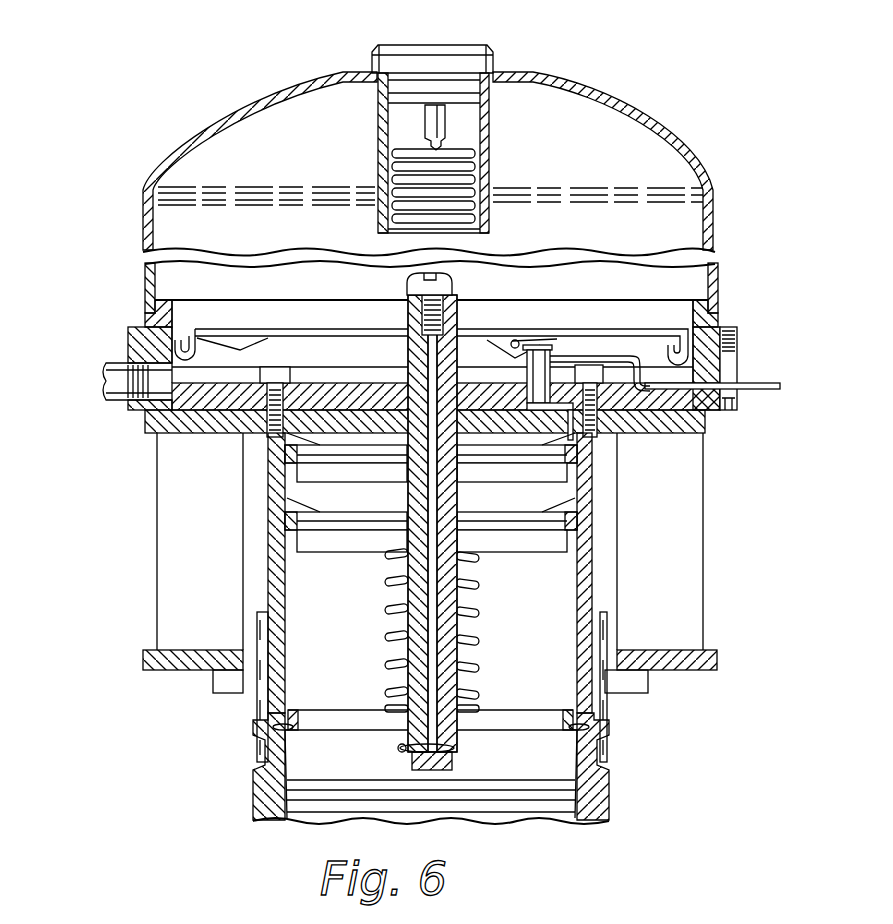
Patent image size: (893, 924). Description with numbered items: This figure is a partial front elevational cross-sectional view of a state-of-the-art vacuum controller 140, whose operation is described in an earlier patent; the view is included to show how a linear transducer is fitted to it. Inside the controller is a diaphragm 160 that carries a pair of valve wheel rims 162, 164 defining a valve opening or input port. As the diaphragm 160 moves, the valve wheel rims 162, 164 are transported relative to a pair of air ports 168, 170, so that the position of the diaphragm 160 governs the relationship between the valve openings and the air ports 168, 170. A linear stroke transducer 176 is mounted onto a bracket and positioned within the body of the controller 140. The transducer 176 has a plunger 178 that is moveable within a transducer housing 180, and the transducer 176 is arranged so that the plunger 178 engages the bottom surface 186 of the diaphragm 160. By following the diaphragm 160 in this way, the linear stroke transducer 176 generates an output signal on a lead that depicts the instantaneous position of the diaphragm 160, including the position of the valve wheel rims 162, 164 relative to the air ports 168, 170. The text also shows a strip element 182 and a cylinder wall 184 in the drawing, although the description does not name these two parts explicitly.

The vacuum controller 140 is at (563, 112).
The diaphragm 160 is at (618, 325).
The valve wheel rim 162 is at (298, 440).
The valve wheel rim 164 is at (297, 500).
The air port 168 is at (287, 470).
The air port 170 is at (287, 530).
The linear stroke transducer 176 is at (715, 327).
The plunger 178 is at (545, 335).
The transducer housing 180 is at (484, 350).
The mounting strip 182 is at (760, 388).
The cylinder wall 184 is at (615, 442).
The bottom surface 186 is at (200, 338).